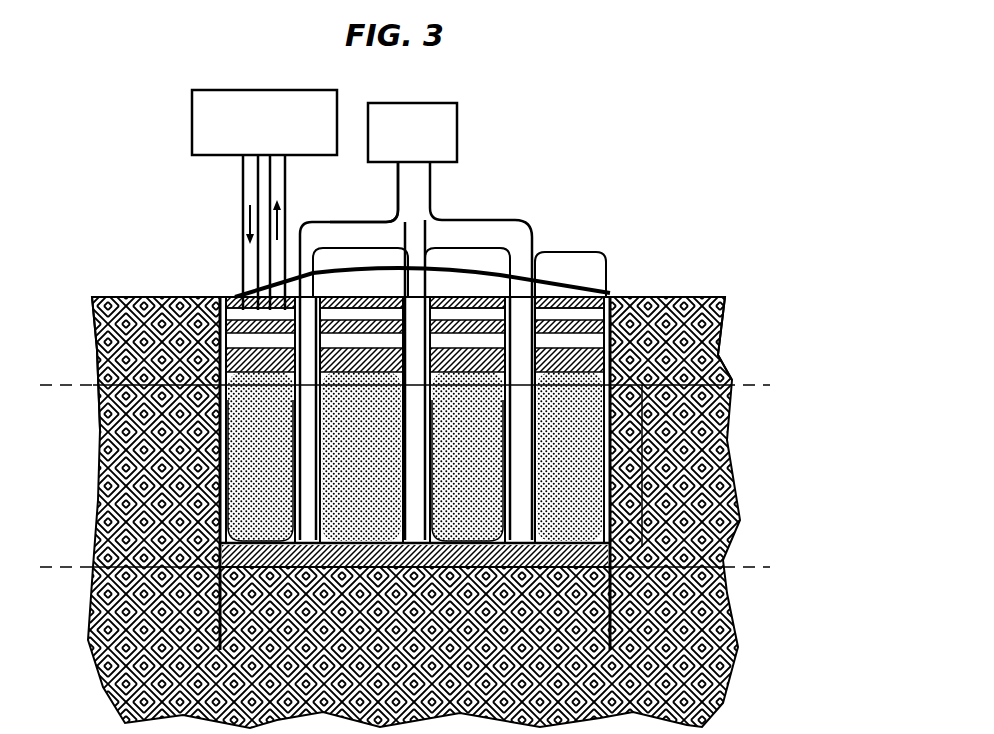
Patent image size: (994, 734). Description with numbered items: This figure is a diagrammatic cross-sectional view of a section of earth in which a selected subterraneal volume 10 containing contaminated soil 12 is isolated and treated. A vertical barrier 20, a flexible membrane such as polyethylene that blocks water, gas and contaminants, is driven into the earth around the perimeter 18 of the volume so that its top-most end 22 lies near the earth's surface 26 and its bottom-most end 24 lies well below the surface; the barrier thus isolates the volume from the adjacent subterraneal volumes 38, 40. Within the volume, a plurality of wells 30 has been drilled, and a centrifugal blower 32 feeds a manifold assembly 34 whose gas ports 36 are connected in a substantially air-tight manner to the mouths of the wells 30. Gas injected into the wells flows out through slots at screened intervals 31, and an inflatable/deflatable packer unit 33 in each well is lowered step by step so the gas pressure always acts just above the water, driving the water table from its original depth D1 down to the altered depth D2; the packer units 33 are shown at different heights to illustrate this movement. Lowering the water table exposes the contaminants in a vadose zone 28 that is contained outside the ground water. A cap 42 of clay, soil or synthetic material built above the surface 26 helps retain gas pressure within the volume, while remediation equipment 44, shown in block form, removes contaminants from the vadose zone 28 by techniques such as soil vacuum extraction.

The subterraneal volume 10 is at (655, 215).
The contaminated soil 12 is at (615, 437).
The perimeter 18 is at (170, 303).
The vertical barrier 20 is at (238, 295).
The top-most end 22 is at (612, 297).
The bottom-most end 24 is at (622, 650).
The surface 26 is at (715, 295).
The vadose zone 28 is at (645, 464).
The wells 30 is at (310, 355).
The screened intervals 31 is at (386, 456).
The centrifugal blower 32 is at (458, 133).
The packer unit 33 is at (565, 485).
The manifold assembly 34 is at (348, 223).
The gas ports 36 is at (305, 290).
The adjacent subterraneal volume 38 is at (133, 315).
The adjacent subterraneal volume 40 is at (705, 345).
The cap 42 is at (543, 290).
The remediation equipment 44 is at (192, 135).
The original depth D1 is at (750, 385).
The altered depth D2 is at (762, 567).